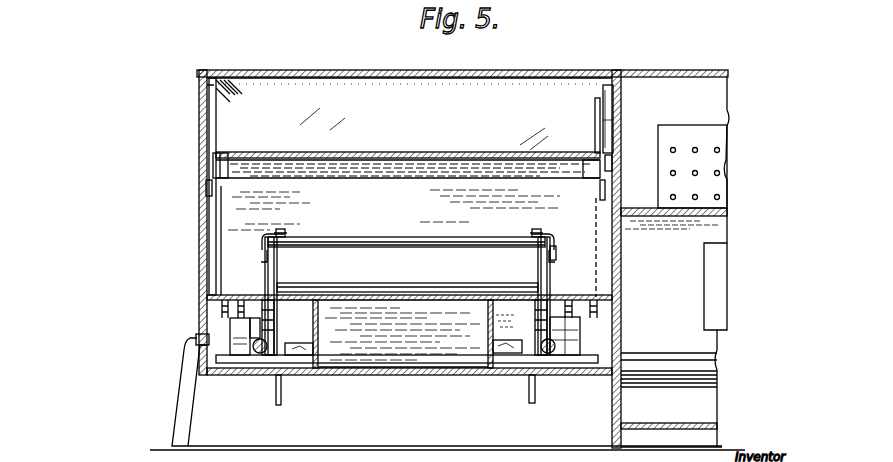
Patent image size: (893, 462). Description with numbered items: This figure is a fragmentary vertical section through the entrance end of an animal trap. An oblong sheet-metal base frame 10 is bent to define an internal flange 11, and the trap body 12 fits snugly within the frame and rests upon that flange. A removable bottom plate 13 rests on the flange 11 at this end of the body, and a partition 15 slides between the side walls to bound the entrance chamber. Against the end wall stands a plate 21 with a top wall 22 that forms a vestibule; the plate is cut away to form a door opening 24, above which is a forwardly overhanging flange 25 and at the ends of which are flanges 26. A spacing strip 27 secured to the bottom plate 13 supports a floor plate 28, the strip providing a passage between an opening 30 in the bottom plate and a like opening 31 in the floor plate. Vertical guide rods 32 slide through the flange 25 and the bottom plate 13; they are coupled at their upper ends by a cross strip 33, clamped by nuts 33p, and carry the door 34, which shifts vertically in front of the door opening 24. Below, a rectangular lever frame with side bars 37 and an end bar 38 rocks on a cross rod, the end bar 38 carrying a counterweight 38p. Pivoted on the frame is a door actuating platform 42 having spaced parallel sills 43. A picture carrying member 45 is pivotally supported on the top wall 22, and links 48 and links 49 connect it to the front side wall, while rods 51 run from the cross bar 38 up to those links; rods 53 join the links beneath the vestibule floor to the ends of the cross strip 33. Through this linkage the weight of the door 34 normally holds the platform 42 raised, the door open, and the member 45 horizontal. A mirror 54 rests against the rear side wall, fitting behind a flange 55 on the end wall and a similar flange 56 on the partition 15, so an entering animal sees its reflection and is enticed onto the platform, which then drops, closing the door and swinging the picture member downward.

The base frame 10 is at (185, 405).
The internal flange 11 is at (332, 375).
The trap body 12 is at (203, 264).
The bottom plate 13 is at (568, 375).
The partition 15 is at (622, 194).
The plate 21 is at (394, 210).
The top wall 22 is at (463, 163).
The door opening 24 is at (400, 265).
The forwardly overhanging flange 25 is at (440, 237).
The flanges 26 is at (240, 296).
The spacing strip 27 is at (318, 320).
The floor plate 28 is at (365, 294).
The opening 30 is at (412, 378).
The opening 31 is at (402, 334).
The vertical guide rods 32 is at (280, 229).
The cross strip 33 is at (477, 236).
The nuts 33p is at (286, 237).
The door 34 is at (447, 294).
The side bars 37 is at (240, 350).
The end bar 38 is at (492, 378).
The counterweight 38p is at (512, 347).
The door actuating platform 42 is at (205, 313).
The sills 43 is at (258, 352).
The picture carrying member 45 is at (410, 152).
The links 48 is at (213, 170).
The links 49 is at (200, 190).
The rods 51 is at (222, 222).
The rods 53 is at (552, 256).
The mirror 54 is at (409, 117).
The flange 55 is at (215, 133).
The flange 56 is at (607, 70).